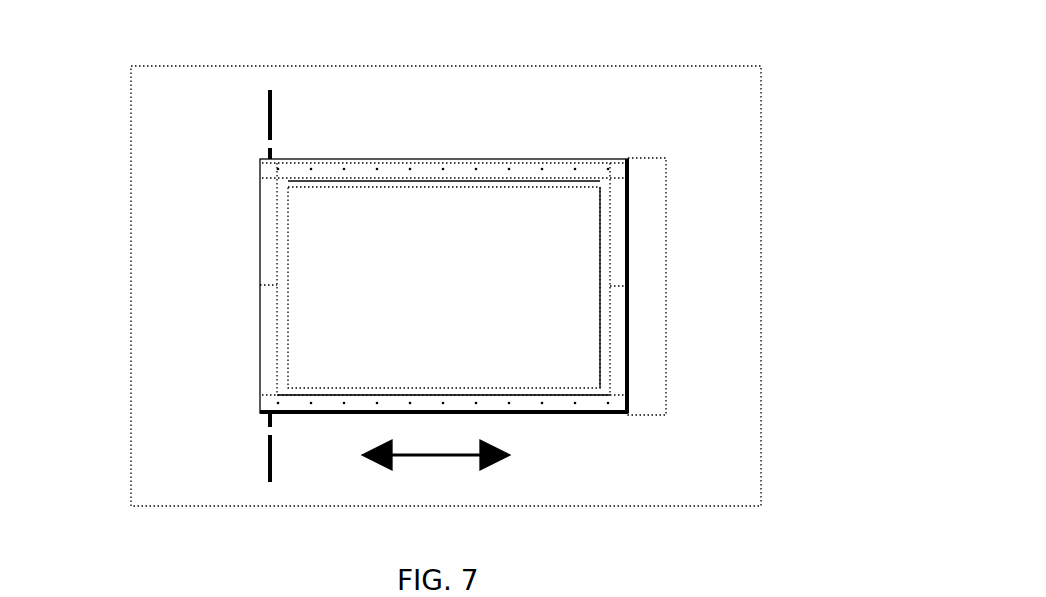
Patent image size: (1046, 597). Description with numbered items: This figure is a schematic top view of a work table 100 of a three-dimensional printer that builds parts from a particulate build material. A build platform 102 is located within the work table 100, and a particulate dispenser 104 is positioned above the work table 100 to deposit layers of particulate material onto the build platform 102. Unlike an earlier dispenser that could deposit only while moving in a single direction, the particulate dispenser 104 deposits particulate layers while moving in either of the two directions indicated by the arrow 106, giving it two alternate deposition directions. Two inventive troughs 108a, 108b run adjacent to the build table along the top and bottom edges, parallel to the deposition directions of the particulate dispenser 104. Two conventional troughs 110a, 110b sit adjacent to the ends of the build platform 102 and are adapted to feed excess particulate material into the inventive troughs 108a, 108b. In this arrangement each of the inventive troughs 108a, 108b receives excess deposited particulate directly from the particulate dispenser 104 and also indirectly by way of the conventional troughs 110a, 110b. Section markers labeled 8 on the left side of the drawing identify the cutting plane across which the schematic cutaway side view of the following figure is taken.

The work table 100 is at (582, 95).
The build platform 102 is at (470, 290).
The particulate dispenser 104 is at (655, 163).
The arrow 106 is at (420, 456).
The inventive trough 108a is at (365, 168).
The inventive trough 108b is at (527, 403).
The conventional trough 110a is at (267, 225).
The conventional trough 110b is at (622, 390).
The cutting plane 8 is at (266, 120).